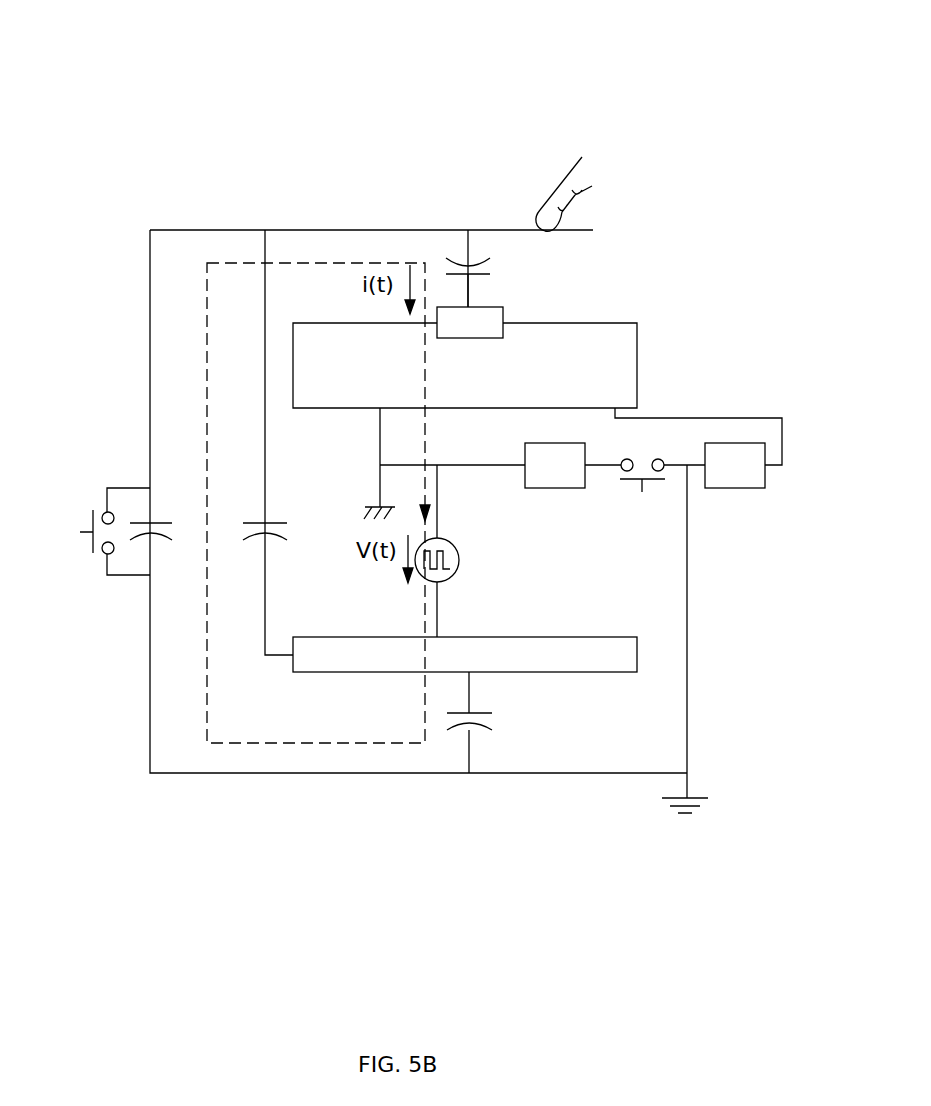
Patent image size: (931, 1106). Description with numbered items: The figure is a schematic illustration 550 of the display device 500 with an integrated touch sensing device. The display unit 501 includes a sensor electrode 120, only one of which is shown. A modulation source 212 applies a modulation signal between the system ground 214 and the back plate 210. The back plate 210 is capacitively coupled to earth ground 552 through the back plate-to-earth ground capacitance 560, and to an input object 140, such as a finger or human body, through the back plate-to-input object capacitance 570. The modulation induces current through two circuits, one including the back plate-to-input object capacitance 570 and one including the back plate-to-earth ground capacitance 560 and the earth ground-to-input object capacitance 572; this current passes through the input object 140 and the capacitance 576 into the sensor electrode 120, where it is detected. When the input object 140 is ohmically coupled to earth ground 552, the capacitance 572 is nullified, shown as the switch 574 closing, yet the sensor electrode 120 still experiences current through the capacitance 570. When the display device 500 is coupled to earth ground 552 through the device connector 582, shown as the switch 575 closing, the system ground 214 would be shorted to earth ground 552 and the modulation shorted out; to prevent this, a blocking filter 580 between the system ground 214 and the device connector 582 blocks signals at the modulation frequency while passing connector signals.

The touch sensing system 550 is at (680, 74).
The display device 500 is at (717, 364).
The input object 140 is at (543, 206).
The capacitance 576 is at (482, 272).
The display unit 501 is at (605, 323).
The sensor electrode 120 is at (480, 338).
The system ground 214 is at (364, 516).
The modulation source 212 is at (460, 553).
The blocking filter 580 is at (548, 443).
The switch 575 is at (657, 481).
The device connector 582 is at (730, 488).
The switch 574 is at (92, 520).
The earth ground-to-input object capacitance 572 is at (158, 540).
The back plate-to-input object capacitance 570 is at (259, 522).
The back plate 210 is at (472, 666).
The back plate-to-earth ground capacitance 560 is at (483, 712).
The earth ground 552 is at (697, 798).